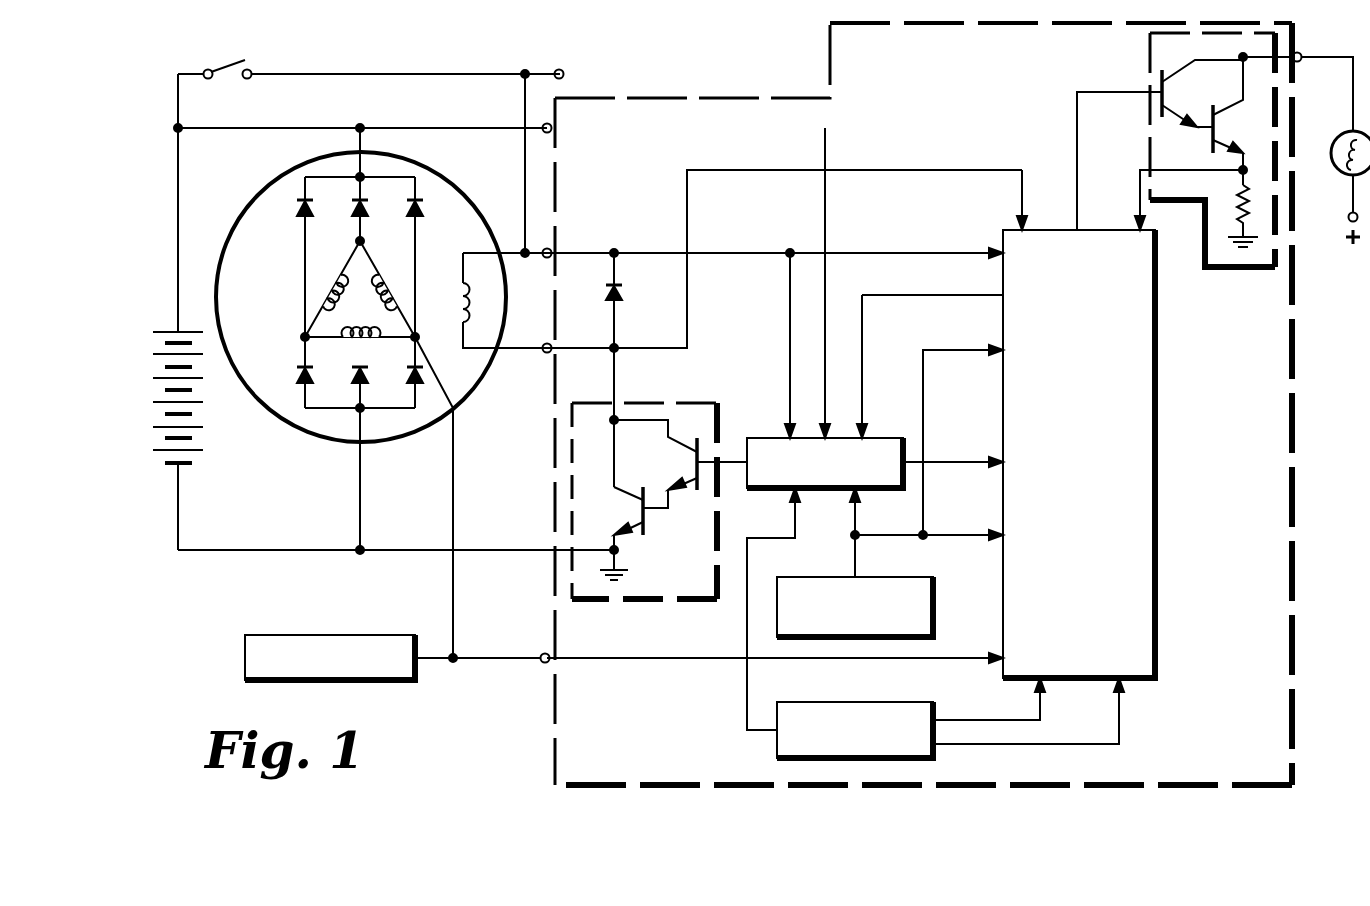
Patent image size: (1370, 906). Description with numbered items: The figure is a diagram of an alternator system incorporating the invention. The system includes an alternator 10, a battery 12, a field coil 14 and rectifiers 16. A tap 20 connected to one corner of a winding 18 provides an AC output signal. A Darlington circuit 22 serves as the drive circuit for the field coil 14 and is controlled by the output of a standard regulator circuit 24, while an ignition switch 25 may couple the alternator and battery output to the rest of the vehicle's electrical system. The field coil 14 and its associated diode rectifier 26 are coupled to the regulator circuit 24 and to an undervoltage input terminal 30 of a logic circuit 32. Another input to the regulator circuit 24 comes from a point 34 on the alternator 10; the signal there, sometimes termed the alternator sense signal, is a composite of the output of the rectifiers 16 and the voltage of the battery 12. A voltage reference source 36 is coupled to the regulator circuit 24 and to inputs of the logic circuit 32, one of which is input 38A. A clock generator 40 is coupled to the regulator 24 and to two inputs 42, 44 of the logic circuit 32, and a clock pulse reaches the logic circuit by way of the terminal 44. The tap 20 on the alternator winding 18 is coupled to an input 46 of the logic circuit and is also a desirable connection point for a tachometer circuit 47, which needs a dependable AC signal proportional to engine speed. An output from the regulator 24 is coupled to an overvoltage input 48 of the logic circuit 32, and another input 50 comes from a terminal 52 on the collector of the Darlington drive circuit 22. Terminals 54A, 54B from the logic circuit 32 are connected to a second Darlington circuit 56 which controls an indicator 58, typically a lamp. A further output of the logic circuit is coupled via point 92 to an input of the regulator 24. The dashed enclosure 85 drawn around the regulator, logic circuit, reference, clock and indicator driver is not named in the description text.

The alternator 10 is at (272, 443).
The battery 12 is at (158, 332).
The field coil 14 is at (456, 293).
The rectifiers 16 is at (298, 205).
The winding 18 is at (323, 292).
The tap 20 is at (442, 392).
The Darlington circuit 22 is at (720, 386).
The regulator circuit 24 is at (746, 437).
The ignition switch 25 is at (246, 68).
The diode rectifier 26 is at (624, 296).
The undervoltage input terminal 30 is at (978, 262).
The logic circuit 32 is at (1158, 392).
The point on the alternator 34 is at (365, 126).
The voltage reference source 36 is at (937, 605).
The input of the logic circuit 38A is at (988, 544).
The clock generator 40 is at (870, 702).
The input of the logic circuit 42 is at (1034, 693).
The input of the logic circuit 44 is at (1114, 693).
The input of the logic circuit 46 is at (994, 658).
The tachometer circuit 47 is at (335, 635).
The overvoltage input 48 is at (978, 472).
The input of the logic circuit 50 is at (1019, 218).
The terminal on the collector of the Darlington drive circuit 52 is at (614, 488).
The terminal from the logic circuit 54A is at (1076, 227).
The terminal from the logic circuit 54B is at (1136, 224).
The second Darlington circuit 56 is at (1230, 271).
The indicator 58 is at (1331, 132).
The control module enclosure 85 is at (1296, 600).
The point 92 is at (992, 300).